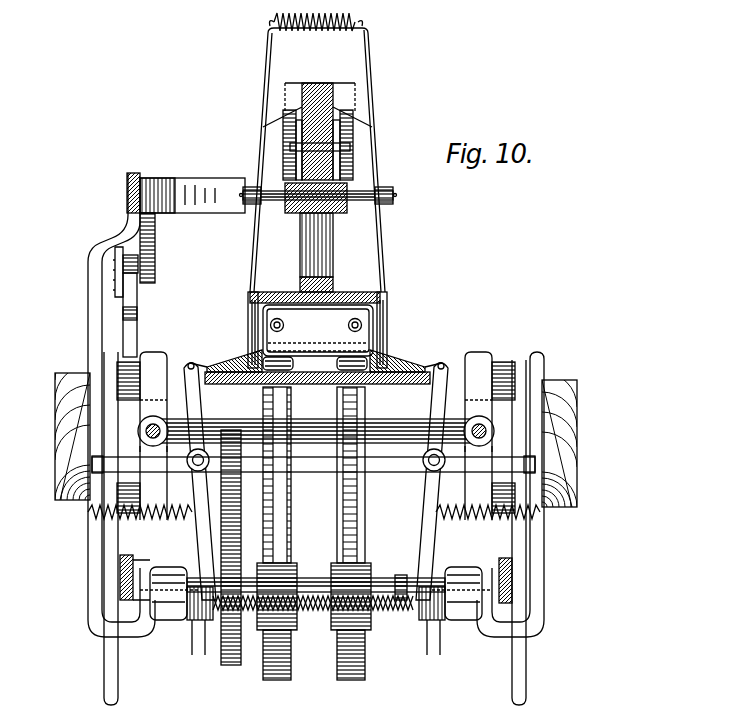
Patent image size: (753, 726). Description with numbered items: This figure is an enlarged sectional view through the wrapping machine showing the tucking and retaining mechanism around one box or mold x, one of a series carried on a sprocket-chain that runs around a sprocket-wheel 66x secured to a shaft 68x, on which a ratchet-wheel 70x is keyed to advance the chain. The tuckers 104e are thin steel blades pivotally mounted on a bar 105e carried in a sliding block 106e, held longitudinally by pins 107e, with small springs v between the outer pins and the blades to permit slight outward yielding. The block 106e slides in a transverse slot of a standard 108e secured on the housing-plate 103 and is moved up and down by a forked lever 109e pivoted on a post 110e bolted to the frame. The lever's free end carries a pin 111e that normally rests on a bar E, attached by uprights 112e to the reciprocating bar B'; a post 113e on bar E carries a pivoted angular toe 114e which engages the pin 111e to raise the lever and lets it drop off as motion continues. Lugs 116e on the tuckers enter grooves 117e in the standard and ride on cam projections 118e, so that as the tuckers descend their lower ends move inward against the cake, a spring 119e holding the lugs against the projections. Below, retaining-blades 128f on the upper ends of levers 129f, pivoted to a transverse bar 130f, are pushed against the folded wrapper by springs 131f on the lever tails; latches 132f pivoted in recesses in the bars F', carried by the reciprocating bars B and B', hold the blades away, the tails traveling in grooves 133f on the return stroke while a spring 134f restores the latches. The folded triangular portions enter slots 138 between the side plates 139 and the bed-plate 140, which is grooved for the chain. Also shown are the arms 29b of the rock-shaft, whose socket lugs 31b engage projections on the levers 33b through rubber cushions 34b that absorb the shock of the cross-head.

The spring 119e is at (317, 152).
The lugs 116e is at (268, 107).
The cam projections 118e is at (283, 126).
The grooves 117e is at (296, 147).
The tuckers 104e is at (262, 158).
The bar 105e is at (360, 203).
The pins 107e is at (243, 196).
The small springs v is at (241, 192).
The sliding block 106e is at (306, 232).
The standard 108e is at (300, 283).
The housing-plate 103 is at (355, 292).
The side plates 139 is at (250, 304).
The box or mold x is at (318, 330).
The slots 138 is at (258, 340).
The bed-plate 140 is at (221, 380).
The retaining-blades 128f is at (205, 352).
The levers 129f is at (199, 407).
The transverse bar 130f is at (313, 467).
The arms 29b is at (312, 449).
The lugs 31b is at (153, 356).
The rubber cushions 34b is at (127, 365).
The forked lever 109e is at (186, 183).
The angular toe 114e is at (150, 258).
The post 113e is at (113, 275).
The post 110e is at (122, 258).
The pin 111e is at (140, 281).
The uprights 112e is at (138, 325).
The bar E is at (137, 304).
The reciprocating bar B' is at (88, 472).
The reciprocating bar B is at (527, 494).
The levers 33b is at (104, 667).
The springs 131f is at (180, 520).
The ratchet-wheel 70x is at (235, 547).
The sprocket-wheel 66x is at (340, 529).
The shaft 68x is at (397, 577).
The spring 134f is at (381, 612).
The latches 132f is at (188, 575).
The grooves 133f is at (193, 622).
The bars F' is at (307, 614).